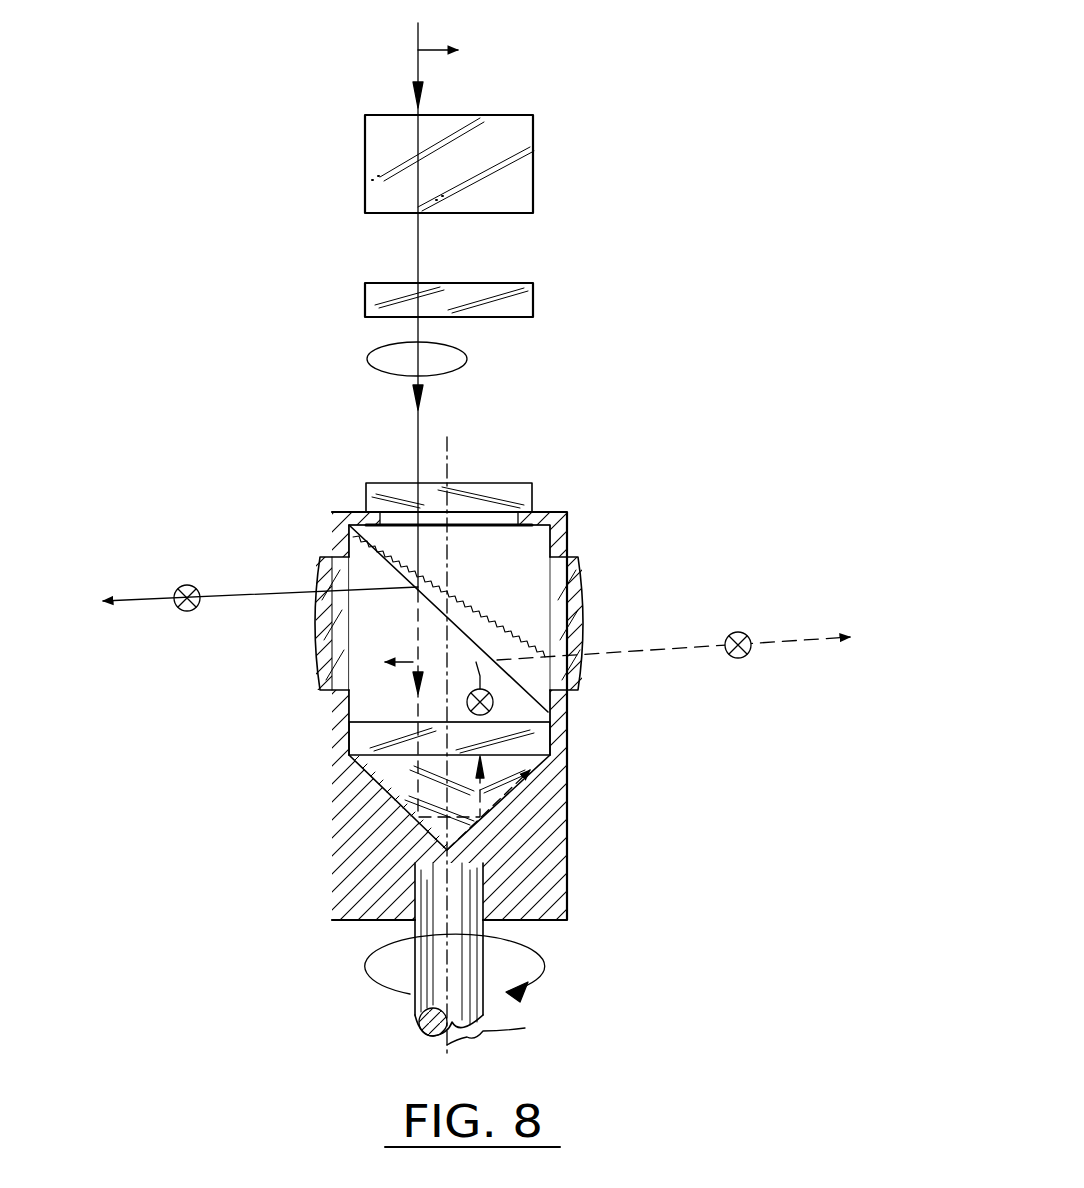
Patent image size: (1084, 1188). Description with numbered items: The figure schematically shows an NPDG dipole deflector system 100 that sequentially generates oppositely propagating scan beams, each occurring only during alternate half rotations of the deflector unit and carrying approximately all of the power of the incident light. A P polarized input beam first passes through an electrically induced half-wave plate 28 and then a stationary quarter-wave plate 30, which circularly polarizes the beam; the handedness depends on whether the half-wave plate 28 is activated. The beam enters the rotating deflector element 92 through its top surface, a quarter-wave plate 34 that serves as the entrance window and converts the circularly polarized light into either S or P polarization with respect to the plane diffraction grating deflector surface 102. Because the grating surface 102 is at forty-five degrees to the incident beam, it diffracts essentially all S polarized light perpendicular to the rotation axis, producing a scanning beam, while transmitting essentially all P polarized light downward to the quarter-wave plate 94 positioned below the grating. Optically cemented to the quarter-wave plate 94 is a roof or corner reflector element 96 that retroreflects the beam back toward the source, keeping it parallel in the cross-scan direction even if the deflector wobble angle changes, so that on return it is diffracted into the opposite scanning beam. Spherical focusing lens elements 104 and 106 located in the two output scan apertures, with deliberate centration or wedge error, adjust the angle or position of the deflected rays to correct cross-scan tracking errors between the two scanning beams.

The electrically induced half-wave plate 28 is at (536, 160).
The stationary quarter-wave plate 30 is at (534, 300).
The quarter-wave plate 34 is at (534, 491).
The NPDG deflector element 92 is at (548, 714).
The quarter-wave plate 94 is at (330, 746).
The roof or corner reflector element 96 is at (497, 797).
The NPDG dipole deflector system 100 is at (286, 281).
The plane diffraction grating deflector surface 102 is at (473, 634).
The spherical focusing lens element 104 is at (313, 642).
The spherical focusing lens element 106 is at (585, 565).